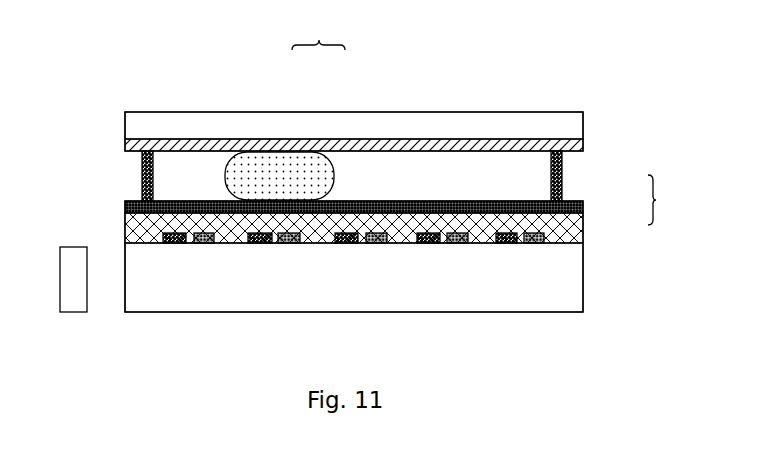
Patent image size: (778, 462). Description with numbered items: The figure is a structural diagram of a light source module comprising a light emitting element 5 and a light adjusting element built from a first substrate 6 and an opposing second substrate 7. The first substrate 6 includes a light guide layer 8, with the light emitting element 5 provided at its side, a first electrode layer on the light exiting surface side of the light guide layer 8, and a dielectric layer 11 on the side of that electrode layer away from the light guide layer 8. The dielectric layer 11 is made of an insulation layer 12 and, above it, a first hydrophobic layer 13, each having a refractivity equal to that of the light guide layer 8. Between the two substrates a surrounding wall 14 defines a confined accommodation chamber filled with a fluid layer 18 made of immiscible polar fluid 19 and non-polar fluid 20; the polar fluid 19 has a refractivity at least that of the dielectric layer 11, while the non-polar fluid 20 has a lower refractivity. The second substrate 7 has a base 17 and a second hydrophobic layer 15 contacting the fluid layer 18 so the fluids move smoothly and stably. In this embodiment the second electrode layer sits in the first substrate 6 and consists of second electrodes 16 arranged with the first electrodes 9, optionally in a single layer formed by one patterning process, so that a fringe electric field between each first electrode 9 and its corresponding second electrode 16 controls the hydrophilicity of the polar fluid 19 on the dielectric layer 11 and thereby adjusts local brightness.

The light emitting element 5 is at (58, 268).
The first substrate 6 is at (89, 230).
The second substrate 7 is at (89, 127).
The light guide layer 8 is at (555, 283).
The first electrode 9 is at (175, 255).
The dielectric layer 11 is at (664, 200).
The insulation layer 12 is at (560, 220).
The first hydrophobic layer 13 is at (560, 203).
The surrounding wall 14 is at (560, 175).
The second hydrophobic layer 15 is at (565, 143).
The second electrode 16 is at (204, 255).
The base 17 is at (565, 127).
The fluid layer 18 is at (318, 35).
The polar fluid 19 is at (272, 156).
The non-polar fluid 20 is at (351, 157).